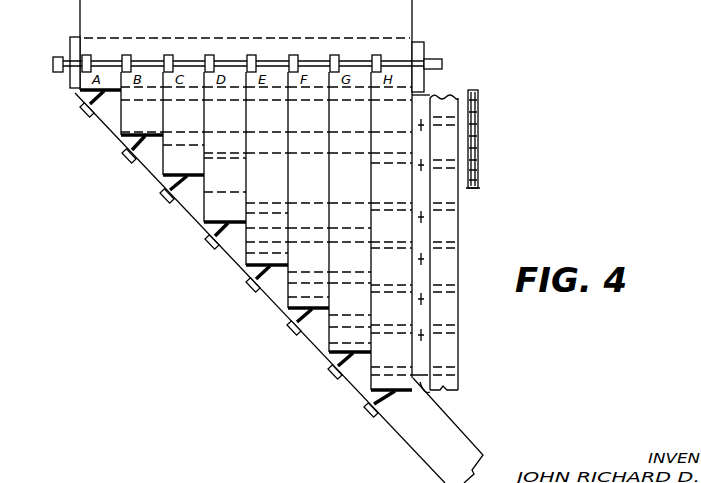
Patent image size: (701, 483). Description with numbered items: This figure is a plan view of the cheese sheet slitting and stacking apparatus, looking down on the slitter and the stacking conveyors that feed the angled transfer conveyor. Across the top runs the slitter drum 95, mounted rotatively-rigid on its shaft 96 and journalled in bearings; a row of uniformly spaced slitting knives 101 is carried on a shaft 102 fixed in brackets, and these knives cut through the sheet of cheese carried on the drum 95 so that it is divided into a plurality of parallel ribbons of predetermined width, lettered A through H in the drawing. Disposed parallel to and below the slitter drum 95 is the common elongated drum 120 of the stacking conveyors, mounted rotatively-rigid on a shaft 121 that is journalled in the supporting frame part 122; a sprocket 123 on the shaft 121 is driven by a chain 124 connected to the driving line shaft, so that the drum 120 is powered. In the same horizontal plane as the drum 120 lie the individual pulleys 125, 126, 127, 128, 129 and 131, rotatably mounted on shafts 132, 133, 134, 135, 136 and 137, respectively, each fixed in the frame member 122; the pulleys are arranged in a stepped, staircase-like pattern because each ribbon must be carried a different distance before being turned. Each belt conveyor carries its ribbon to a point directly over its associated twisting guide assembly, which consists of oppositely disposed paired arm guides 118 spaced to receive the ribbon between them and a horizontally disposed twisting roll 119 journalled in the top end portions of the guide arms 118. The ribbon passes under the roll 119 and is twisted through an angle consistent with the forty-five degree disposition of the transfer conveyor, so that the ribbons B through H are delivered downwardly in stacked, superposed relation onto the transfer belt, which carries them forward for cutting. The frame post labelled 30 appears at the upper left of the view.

The support post 30 is at (88, 12).
The drum 95 is at (70, 78).
The shaft 96 is at (53, 65).
The slitting knives 101 is at (166, 57).
The shaft 102 is at (245, 60).
The arm guides 118 is at (248, 286).
The twisting rolls 119 is at (262, 290).
The elongated drum 120 is at (267, 170).
The shaft 121 is at (422, 132).
The supporting frame part 122 is at (448, 197).
The sprocket 123 is at (479, 130).
The chain 124 is at (479, 177).
The pulley 125 is at (182, 145).
The pulley 126 is at (225, 168).
The pulley 127 is at (267, 254).
The pulley 128 is at (308, 211).
The pulley 129 is at (349, 233).
The pulley 131 is at (388, 252).
The shaft 132 is at (422, 172).
The shaft 133 is at (422, 224).
The shaft 134 is at (422, 266).
The shaft 135 is at (422, 306).
The shaft 136 is at (422, 342).
The shaft 137 is at (427, 390).